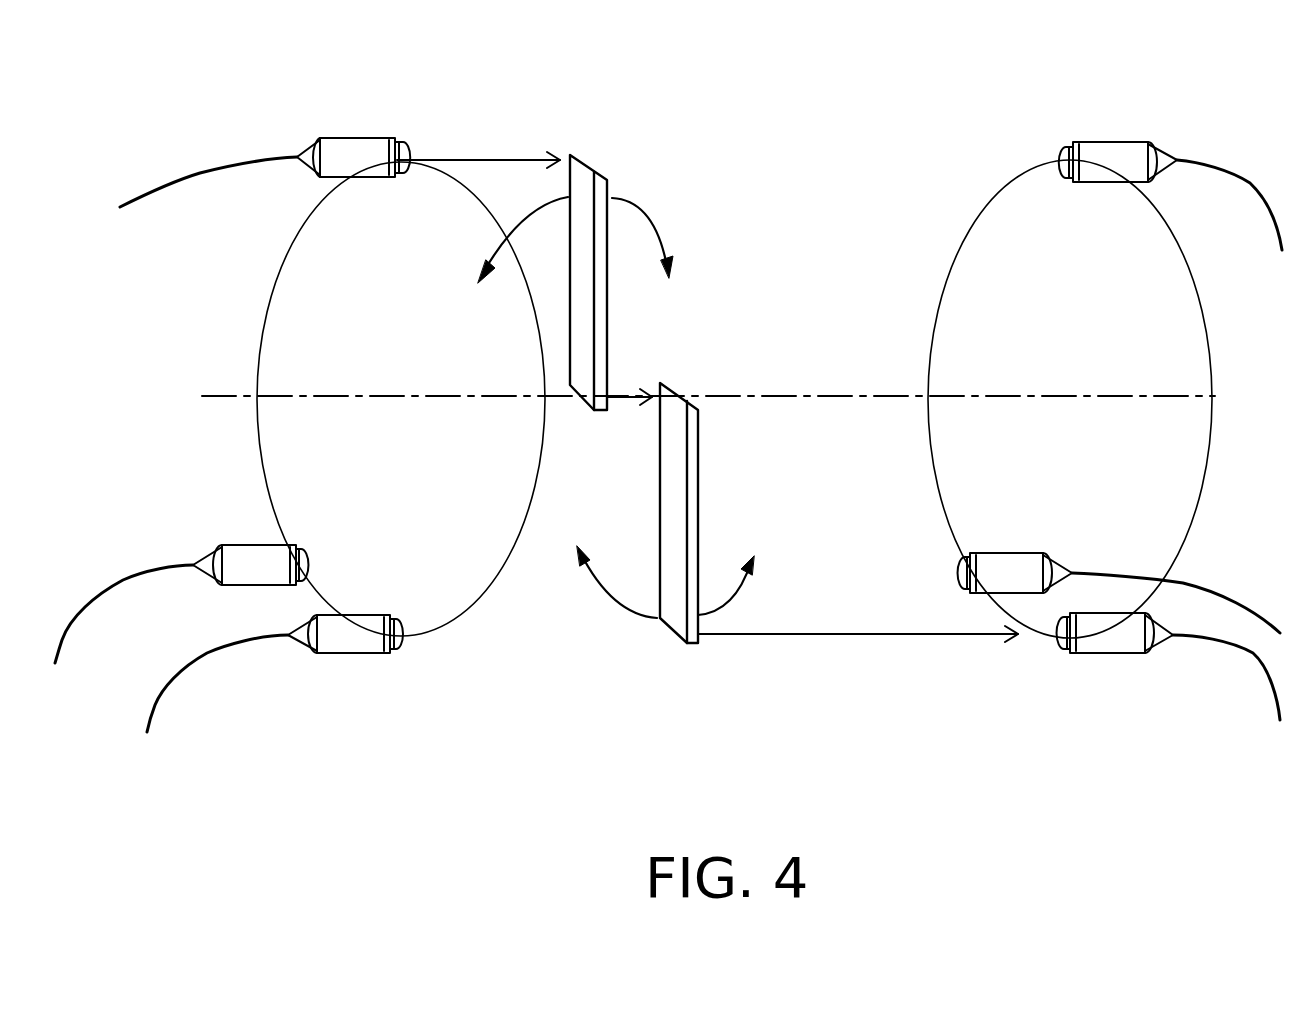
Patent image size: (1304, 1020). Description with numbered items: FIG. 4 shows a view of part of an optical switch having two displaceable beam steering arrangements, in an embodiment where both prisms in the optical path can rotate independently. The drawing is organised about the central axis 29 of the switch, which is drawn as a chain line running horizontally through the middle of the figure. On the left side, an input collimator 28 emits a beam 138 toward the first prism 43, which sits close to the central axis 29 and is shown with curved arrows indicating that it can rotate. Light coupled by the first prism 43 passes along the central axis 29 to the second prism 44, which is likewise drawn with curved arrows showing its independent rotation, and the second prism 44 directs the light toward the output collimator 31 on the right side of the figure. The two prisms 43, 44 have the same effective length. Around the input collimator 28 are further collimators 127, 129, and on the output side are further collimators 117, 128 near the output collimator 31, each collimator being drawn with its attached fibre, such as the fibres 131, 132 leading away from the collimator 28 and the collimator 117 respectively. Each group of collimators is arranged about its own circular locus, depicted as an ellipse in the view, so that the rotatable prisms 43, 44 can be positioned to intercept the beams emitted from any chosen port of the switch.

The input collimator 28 is at (361, 138).
The central axis 29 is at (803, 397).
The output collimator 31 is at (1130, 657).
The prism 43 is at (593, 163).
The prism 44 is at (685, 645).
The optical connector 117 is at (1118, 142).
The optical connector 127 is at (357, 655).
The optical connector 128 is at (1020, 598).
The optical connector 129 is at (252, 585).
The optical fiber cable 131 is at (303, 220).
The optical fiber cable 132 is at (1167, 217).
The light beam 138 is at (502, 158).